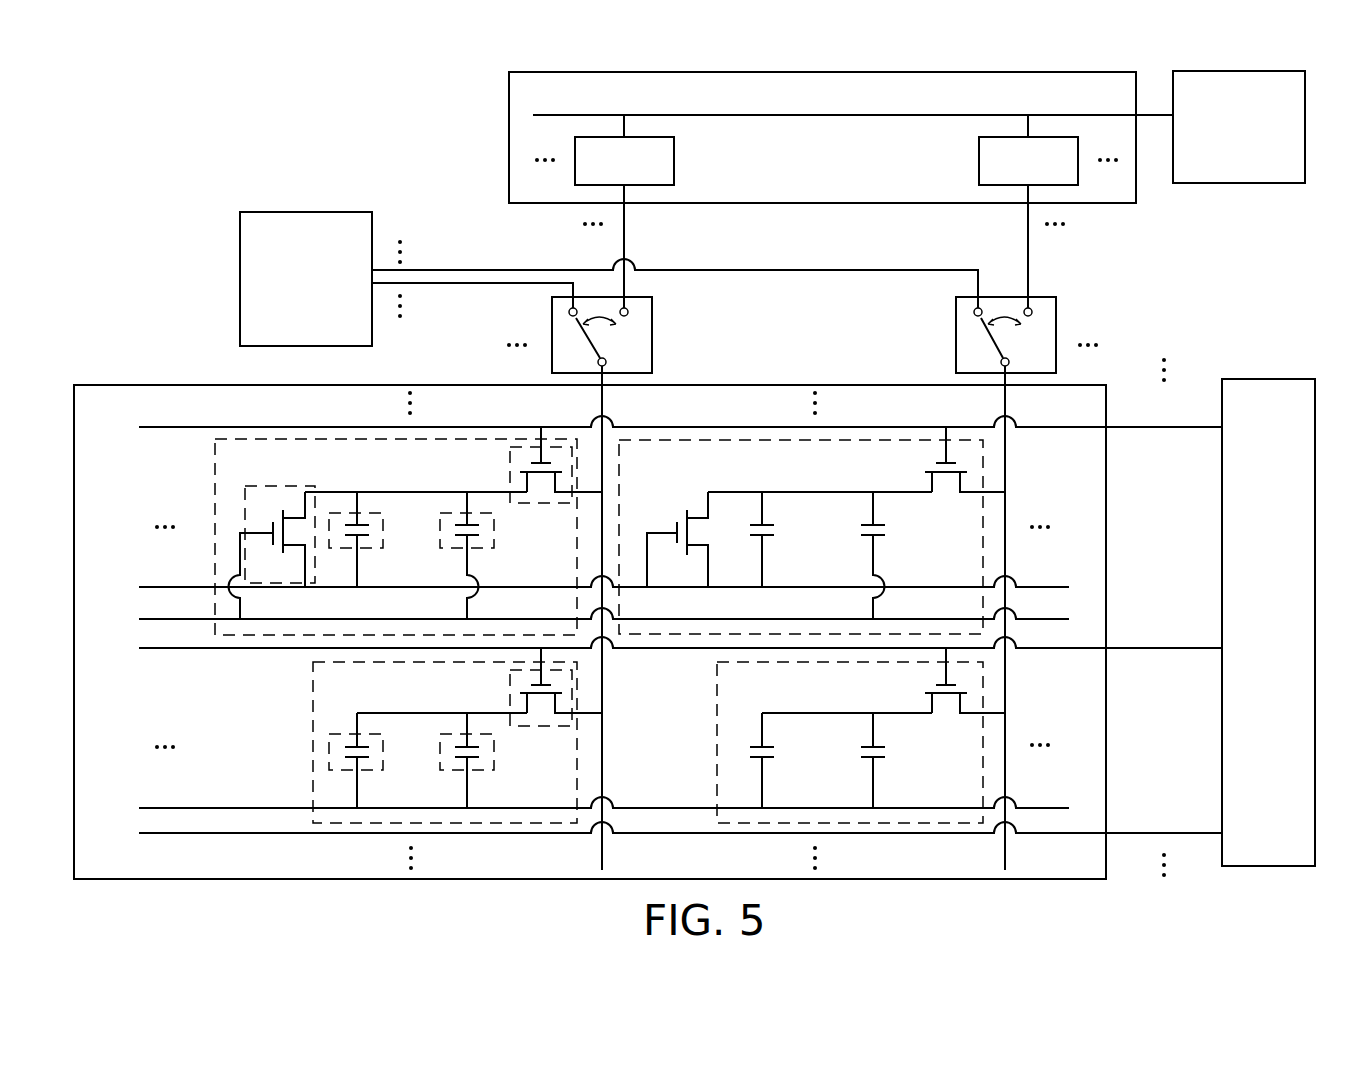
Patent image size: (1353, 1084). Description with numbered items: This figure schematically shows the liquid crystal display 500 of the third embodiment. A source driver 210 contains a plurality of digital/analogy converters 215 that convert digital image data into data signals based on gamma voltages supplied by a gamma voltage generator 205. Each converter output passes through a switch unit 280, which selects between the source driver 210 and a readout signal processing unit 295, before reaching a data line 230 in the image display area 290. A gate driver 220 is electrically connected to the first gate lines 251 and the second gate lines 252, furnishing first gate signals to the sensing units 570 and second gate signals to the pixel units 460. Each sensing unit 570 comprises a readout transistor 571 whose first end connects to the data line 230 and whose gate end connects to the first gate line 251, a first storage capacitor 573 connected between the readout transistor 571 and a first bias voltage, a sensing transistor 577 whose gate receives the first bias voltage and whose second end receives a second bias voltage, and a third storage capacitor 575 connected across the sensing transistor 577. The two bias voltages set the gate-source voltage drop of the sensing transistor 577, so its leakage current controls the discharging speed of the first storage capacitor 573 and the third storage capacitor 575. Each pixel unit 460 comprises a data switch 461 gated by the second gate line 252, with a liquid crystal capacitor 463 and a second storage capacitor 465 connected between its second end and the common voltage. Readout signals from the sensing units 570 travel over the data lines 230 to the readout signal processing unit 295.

The liquid crystal display 500 is at (212, 127).
The source driver 210 is at (509, 157).
The digital/analogy converter 215 is at (605, 175).
The gamma voltage generator 205 is at (1217, 183).
The readout signal processing unit 295 is at (292, 212).
The switch unit 280 is at (652, 328).
The data line 230 is at (602, 400).
The gate driver 220 is at (1262, 379).
The image display area 290 is at (127, 385).
The first gate line 251 is at (150, 427).
The second gate line 252 is at (150, 648).
The sensing unit 570 is at (215, 503).
The sensing transistor 577 is at (280, 486).
The readout transistor 571 is at (510, 470).
The third storage capacitor 575 is at (383, 527).
The first storage capacitor 573 is at (495, 527).
The pixel unit 460 is at (313, 740).
The data switch 461 is at (510, 690).
The second storage capacitor 465 is at (383, 750).
The liquid crystal capacitor 463 is at (495, 750).